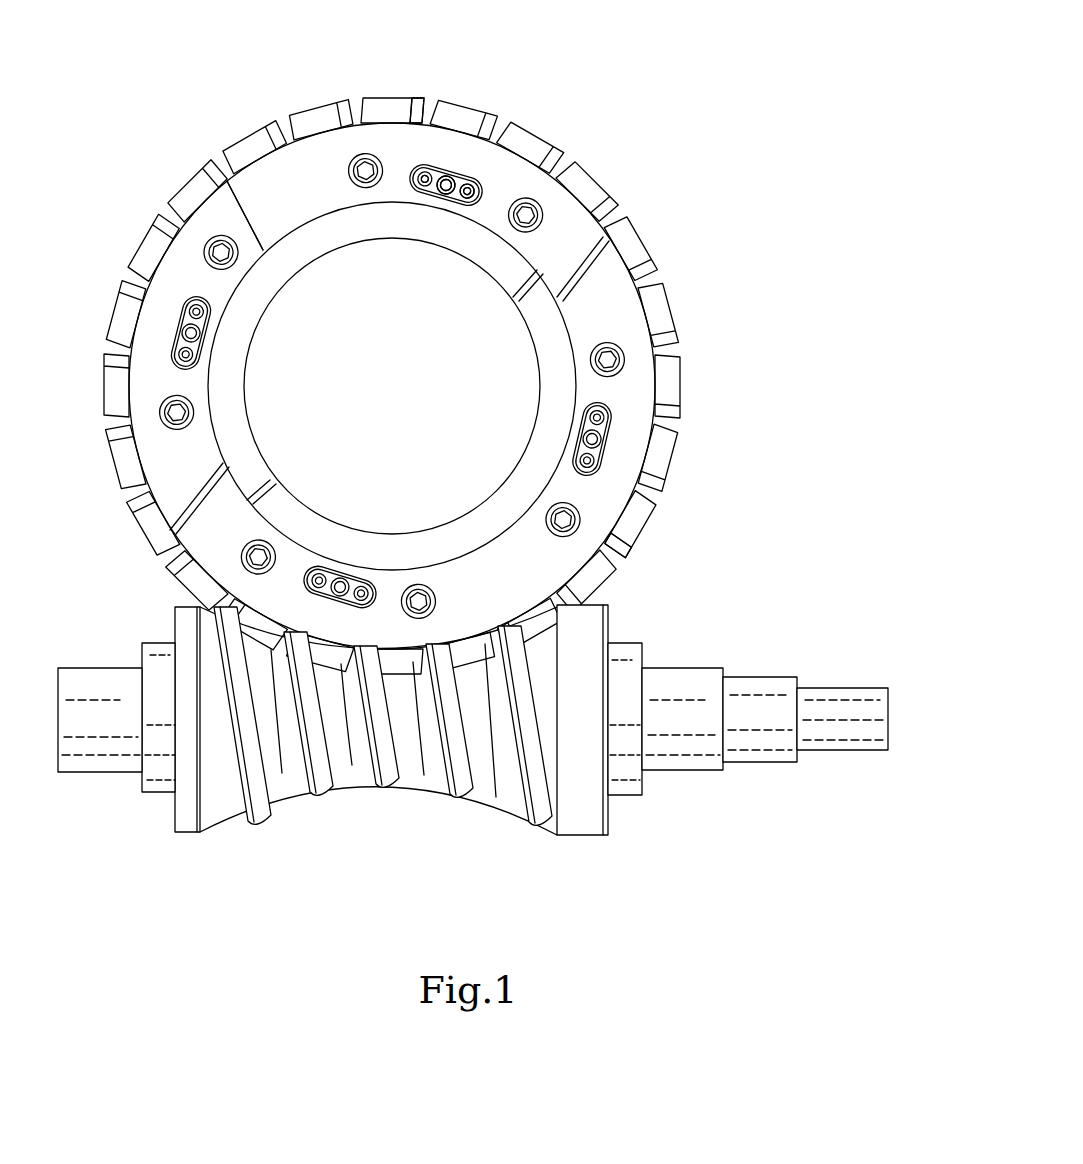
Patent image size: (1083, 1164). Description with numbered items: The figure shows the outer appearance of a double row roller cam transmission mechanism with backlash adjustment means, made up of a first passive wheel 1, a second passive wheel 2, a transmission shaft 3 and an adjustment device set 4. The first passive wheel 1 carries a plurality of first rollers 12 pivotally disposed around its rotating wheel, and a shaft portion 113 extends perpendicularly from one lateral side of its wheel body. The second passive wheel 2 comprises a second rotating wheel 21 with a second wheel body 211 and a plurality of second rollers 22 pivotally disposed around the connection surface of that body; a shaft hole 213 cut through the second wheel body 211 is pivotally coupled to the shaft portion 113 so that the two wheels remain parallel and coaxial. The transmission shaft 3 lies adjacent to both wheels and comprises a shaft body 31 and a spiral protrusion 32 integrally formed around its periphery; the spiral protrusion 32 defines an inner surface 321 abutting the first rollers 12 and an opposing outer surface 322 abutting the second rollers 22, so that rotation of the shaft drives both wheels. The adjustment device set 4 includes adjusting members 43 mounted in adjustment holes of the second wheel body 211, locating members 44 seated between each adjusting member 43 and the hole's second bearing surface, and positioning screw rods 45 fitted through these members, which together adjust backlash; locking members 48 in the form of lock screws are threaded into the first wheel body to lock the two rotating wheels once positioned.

The first passive wheel 1 is at (287, 283).
The shaft portion 113 is at (247, 440).
The first rollers 12 is at (420, 108).
The second passive wheel 2 is at (222, 166).
The second rotating wheel 21 is at (283, 137).
The second wheel body 211 is at (340, 148).
The shaft hole 213 is at (232, 192).
The second rollers 22 is at (393, 107).
The transmission shaft 3 is at (473, 731).
The shaft body 31 is at (672, 762).
The spiral protrusion 32 is at (373, 754).
The inner surface 321 is at (292, 728).
The outer surface 322 is at (360, 755).
The adjustment device set 4 is at (446, 172).
The adjusting members 43 is at (468, 182).
The locating members 44 is at (488, 188).
The positioning screw rods 45 is at (467, 200).
The locking members 48 is at (538, 213).